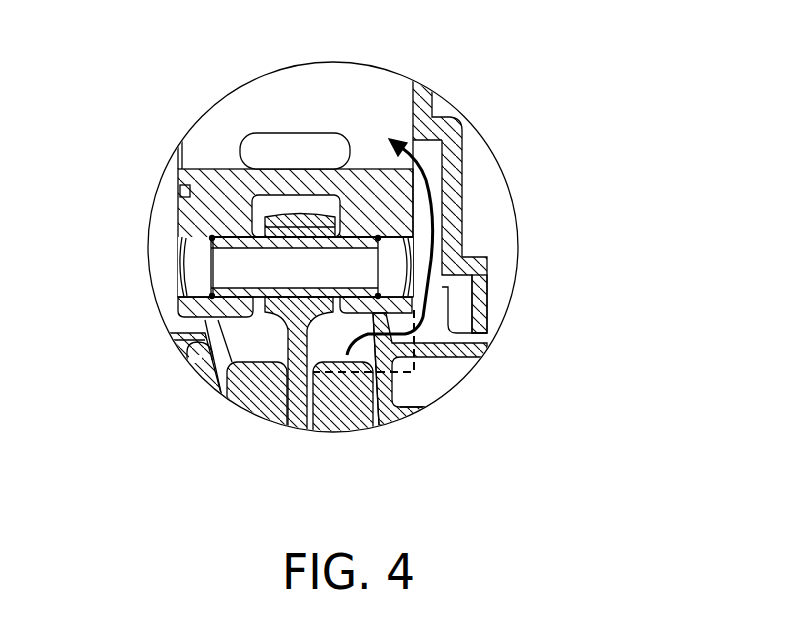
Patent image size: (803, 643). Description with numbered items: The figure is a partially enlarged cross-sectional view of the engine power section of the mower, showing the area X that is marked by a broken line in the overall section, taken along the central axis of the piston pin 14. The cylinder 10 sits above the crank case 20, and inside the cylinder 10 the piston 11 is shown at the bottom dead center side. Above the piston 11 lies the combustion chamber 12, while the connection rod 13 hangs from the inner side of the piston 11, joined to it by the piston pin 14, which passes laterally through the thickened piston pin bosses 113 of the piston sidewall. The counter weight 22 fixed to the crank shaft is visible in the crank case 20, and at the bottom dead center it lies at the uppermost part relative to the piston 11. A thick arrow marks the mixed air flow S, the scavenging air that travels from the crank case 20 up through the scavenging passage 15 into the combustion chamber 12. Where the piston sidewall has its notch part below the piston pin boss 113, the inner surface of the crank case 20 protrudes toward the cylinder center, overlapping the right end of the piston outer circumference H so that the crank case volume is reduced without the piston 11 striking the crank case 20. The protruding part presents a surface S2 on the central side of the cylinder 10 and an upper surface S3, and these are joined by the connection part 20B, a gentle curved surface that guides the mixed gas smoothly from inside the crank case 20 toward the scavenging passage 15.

The cylinder 10 is at (462, 178).
The piston 11 is at (208, 187).
The combustion chamber 12 is at (370, 117).
The connection rod 13 is at (215, 385).
The piston pin 14 is at (174, 220).
The scavenging passage 15 is at (462, 163).
The crank case 20 is at (473, 406).
The connection part 20B is at (400, 383).
The counter weight 22 is at (250, 395).
The piston pin boss 113 is at (197, 263).
The mixed air flow S is at (462, 232).
The surface of the crank case protruding part on the central side of the cylinder S2 is at (367, 373).
The upper surface of the crank case protruding part S3 is at (472, 290).
The piston outer circumference H is at (397, 418).
The area X is at (333, 235).